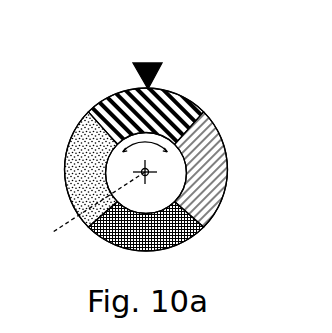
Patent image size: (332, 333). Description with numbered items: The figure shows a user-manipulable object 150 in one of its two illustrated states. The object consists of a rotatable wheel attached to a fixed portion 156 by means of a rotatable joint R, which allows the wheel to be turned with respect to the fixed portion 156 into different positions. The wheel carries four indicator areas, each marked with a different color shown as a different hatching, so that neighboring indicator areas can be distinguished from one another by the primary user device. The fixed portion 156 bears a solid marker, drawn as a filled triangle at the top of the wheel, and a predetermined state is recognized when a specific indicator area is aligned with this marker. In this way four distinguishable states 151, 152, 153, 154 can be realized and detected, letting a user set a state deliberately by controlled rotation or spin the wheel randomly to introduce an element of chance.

The user-manipulable object 150 is at (85, 85).
The first distinguishable state 151 is at (162, 89).
The second distinguishable state 152 is at (70, 153).
The third distinguishable state 153 is at (187, 245).
The fourth distinguishable state 154 is at (220, 165).
The fixed portion 156 is at (152, 86).
The rotatable joint R is at (96, 217).